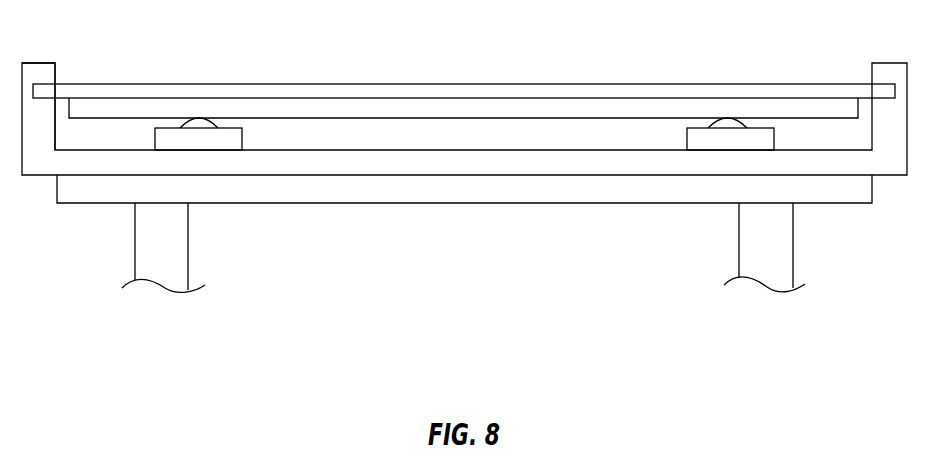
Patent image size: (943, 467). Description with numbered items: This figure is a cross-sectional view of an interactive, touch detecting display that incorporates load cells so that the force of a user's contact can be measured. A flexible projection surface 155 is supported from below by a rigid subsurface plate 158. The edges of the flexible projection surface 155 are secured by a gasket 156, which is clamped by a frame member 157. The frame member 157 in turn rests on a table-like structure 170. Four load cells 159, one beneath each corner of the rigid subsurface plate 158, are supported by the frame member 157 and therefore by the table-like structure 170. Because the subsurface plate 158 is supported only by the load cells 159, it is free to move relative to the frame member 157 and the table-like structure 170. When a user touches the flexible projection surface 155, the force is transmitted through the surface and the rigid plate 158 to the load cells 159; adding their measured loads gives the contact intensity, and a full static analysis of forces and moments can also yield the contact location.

The flexible projection surface 155 is at (706, 90).
The gasket 156 is at (50, 85).
The frame member 157 is at (882, 67).
The rigid subsurface plate 158 is at (440, 108).
The load cells 159 is at (232, 138).
The table-like structure 170 is at (388, 190).